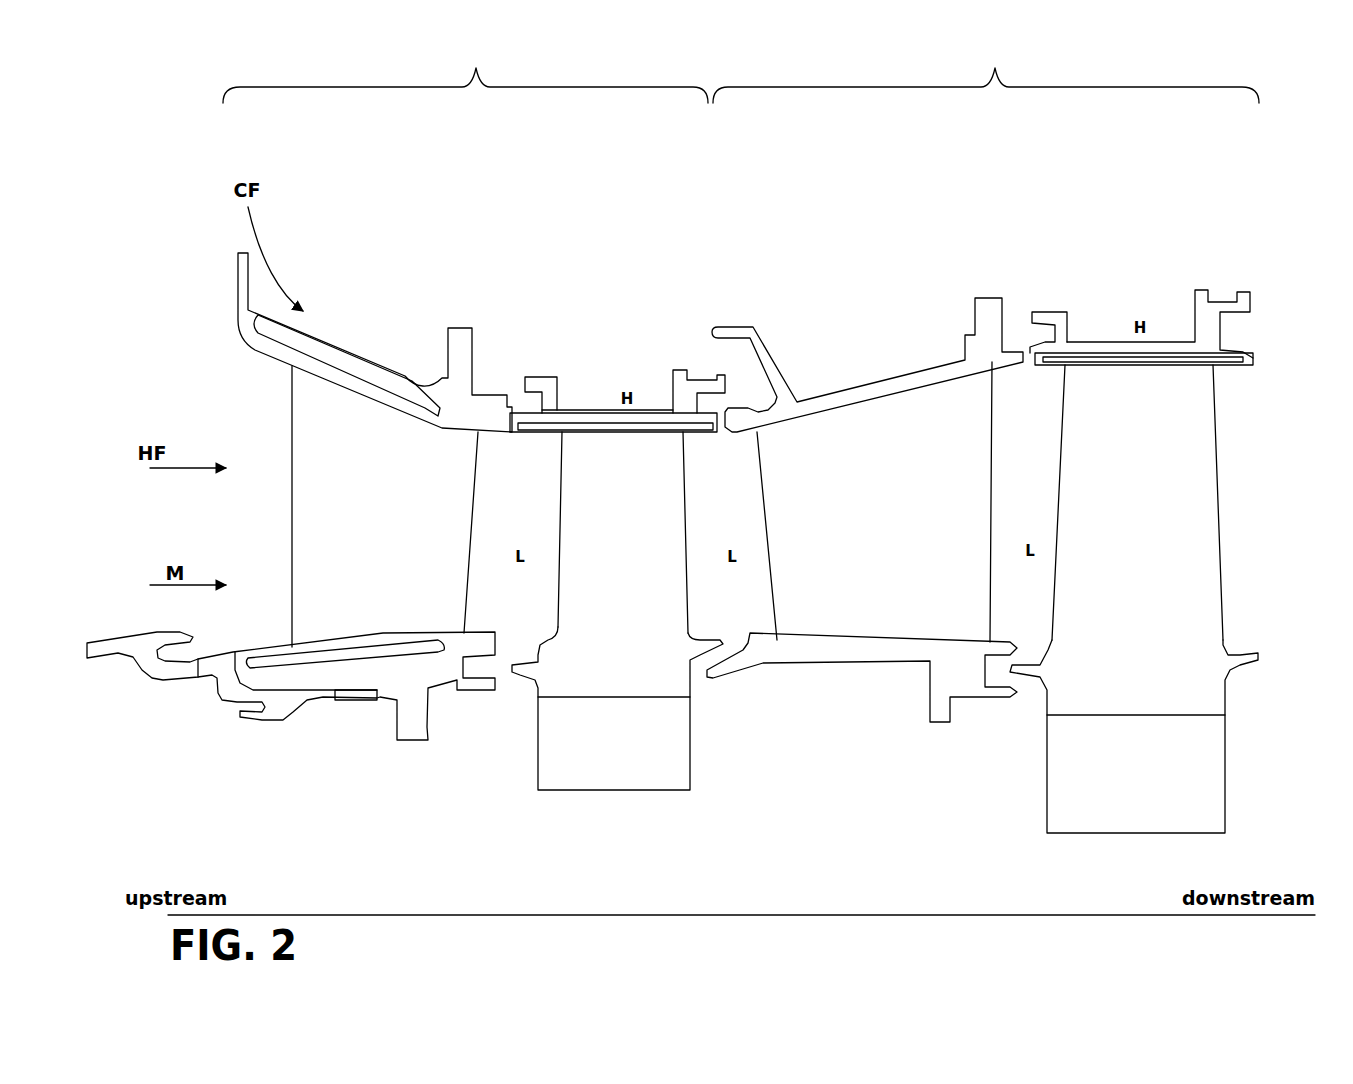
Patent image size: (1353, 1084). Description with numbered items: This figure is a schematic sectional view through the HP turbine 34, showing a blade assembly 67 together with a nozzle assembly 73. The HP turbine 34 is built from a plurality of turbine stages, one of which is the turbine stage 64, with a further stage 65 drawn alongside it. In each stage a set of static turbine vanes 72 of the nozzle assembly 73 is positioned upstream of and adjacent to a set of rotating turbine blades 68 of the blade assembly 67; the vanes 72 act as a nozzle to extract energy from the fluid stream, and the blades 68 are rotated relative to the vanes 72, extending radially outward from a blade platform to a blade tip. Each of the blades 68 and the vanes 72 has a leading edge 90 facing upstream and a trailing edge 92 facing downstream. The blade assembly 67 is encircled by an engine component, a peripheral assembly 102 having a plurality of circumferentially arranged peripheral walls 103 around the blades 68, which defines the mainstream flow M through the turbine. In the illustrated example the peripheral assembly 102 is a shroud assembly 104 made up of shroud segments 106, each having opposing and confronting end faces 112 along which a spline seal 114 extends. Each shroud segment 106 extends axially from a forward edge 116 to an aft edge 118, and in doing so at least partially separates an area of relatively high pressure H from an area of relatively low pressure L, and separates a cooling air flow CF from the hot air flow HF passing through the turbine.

The turbine stage 64 is at (465, 72).
The second turbine stage 65 is at (986, 72).
The HP turbine 34 is at (497, 222).
The nozzle assembly 73 is at (352, 320).
The turbine vanes 72 is at (366, 530).
The turbine blades 68 is at (608, 610).
The leading edge 90 is at (291, 474).
The trailing edge 92 is at (473, 555).
The peripheral assembly 102 is at (567, 380).
The peripheral walls 103 is at (511, 416).
The shroud assembly 104 is at (1234, 280).
The shroud segment 106 is at (1062, 312).
The end faces 112 is at (693, 392).
The blade assembly 67 is at (609, 384).
The spline seal 114 is at (580, 442).
The forward edge 116 is at (510, 433).
The aft edge 118 is at (724, 438).